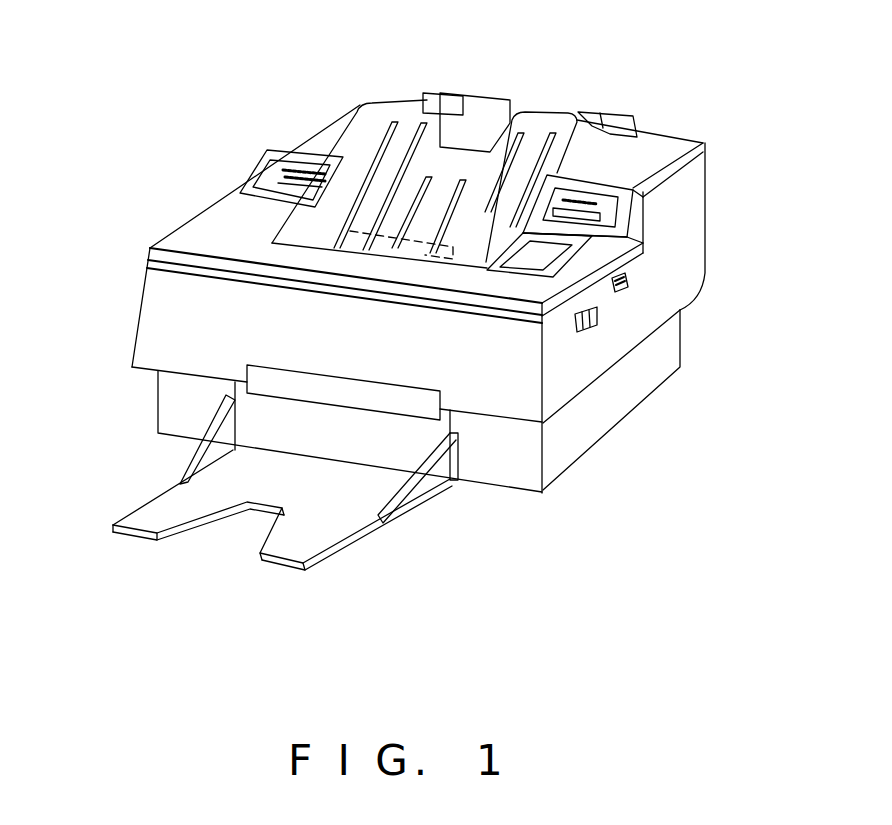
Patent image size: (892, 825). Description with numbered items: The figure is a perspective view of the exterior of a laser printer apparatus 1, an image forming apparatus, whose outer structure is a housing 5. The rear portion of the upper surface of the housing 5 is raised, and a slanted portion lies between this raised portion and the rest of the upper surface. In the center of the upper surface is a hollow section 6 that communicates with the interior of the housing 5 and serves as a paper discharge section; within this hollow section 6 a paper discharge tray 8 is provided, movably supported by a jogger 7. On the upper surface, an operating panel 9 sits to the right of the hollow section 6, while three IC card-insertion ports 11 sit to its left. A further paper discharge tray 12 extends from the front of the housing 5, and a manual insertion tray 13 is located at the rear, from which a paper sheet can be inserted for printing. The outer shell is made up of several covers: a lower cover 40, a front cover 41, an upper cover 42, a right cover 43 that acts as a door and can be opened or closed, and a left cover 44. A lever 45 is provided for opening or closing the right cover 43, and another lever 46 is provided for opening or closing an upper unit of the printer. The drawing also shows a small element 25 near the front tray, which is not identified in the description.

The laser printer apparatus 1 is at (707, 222).
The housing 5 is at (697, 250).
The hollow section 6 is at (475, 208).
The jogger 7 is at (370, 235).
The paper discharge tray 8 is at (543, 120).
The operating panel 9 is at (643, 240).
The IC card-insertion ports 11 is at (287, 162).
The paper discharge tray 12 is at (143, 518).
The manual insertion tray 13 is at (605, 112).
The stopper plate 25 is at (463, 453).
The lower cover 40 is at (620, 402).
The front cover 41 is at (148, 360).
The upper cover 42 is at (665, 142).
The right cover 43 is at (658, 255).
The left cover 44 is at (138, 300).
The lever for opening or closing the right cover 45 is at (627, 283).
The lever for opening or closing an upper unit 46 is at (597, 322).